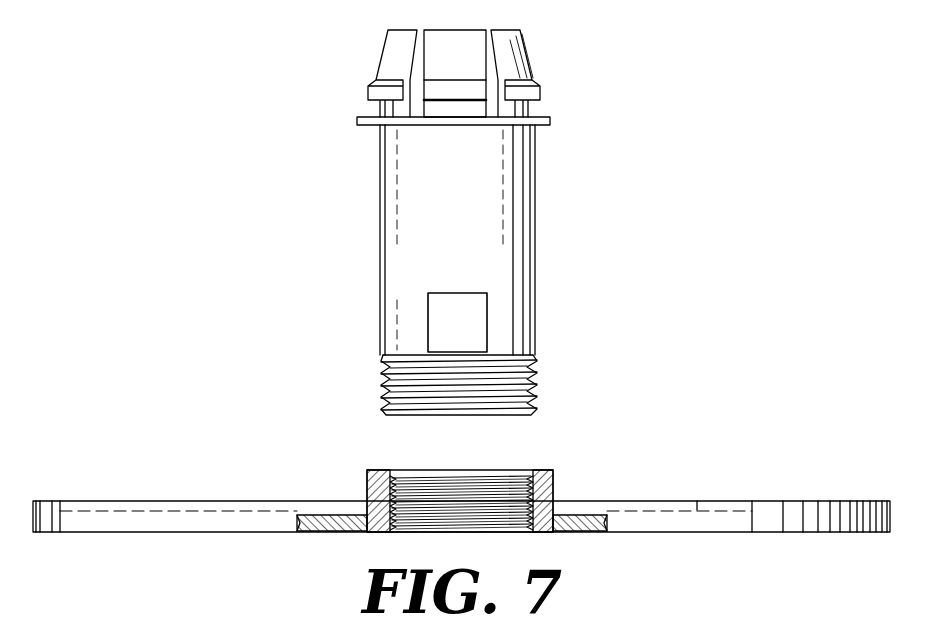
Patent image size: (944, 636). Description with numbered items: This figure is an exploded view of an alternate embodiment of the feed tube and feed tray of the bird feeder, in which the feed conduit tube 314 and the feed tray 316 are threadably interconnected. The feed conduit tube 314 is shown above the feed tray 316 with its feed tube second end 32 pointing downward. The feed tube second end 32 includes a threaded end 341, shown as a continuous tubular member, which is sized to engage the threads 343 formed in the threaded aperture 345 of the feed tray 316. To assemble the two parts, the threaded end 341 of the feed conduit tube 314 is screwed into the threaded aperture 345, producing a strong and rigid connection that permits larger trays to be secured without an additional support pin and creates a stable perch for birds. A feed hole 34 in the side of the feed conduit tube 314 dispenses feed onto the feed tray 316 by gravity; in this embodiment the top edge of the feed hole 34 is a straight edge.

The feed tube second end 32 is at (486, 222).
The feed conduit tube 314 is at (537, 180).
The feed hole 34 is at (440, 318).
The threaded end 341 is at (538, 404).
The threads 343 is at (398, 502).
The threaded aperture 345 is at (474, 485).
The feed tray 316 is at (823, 500).